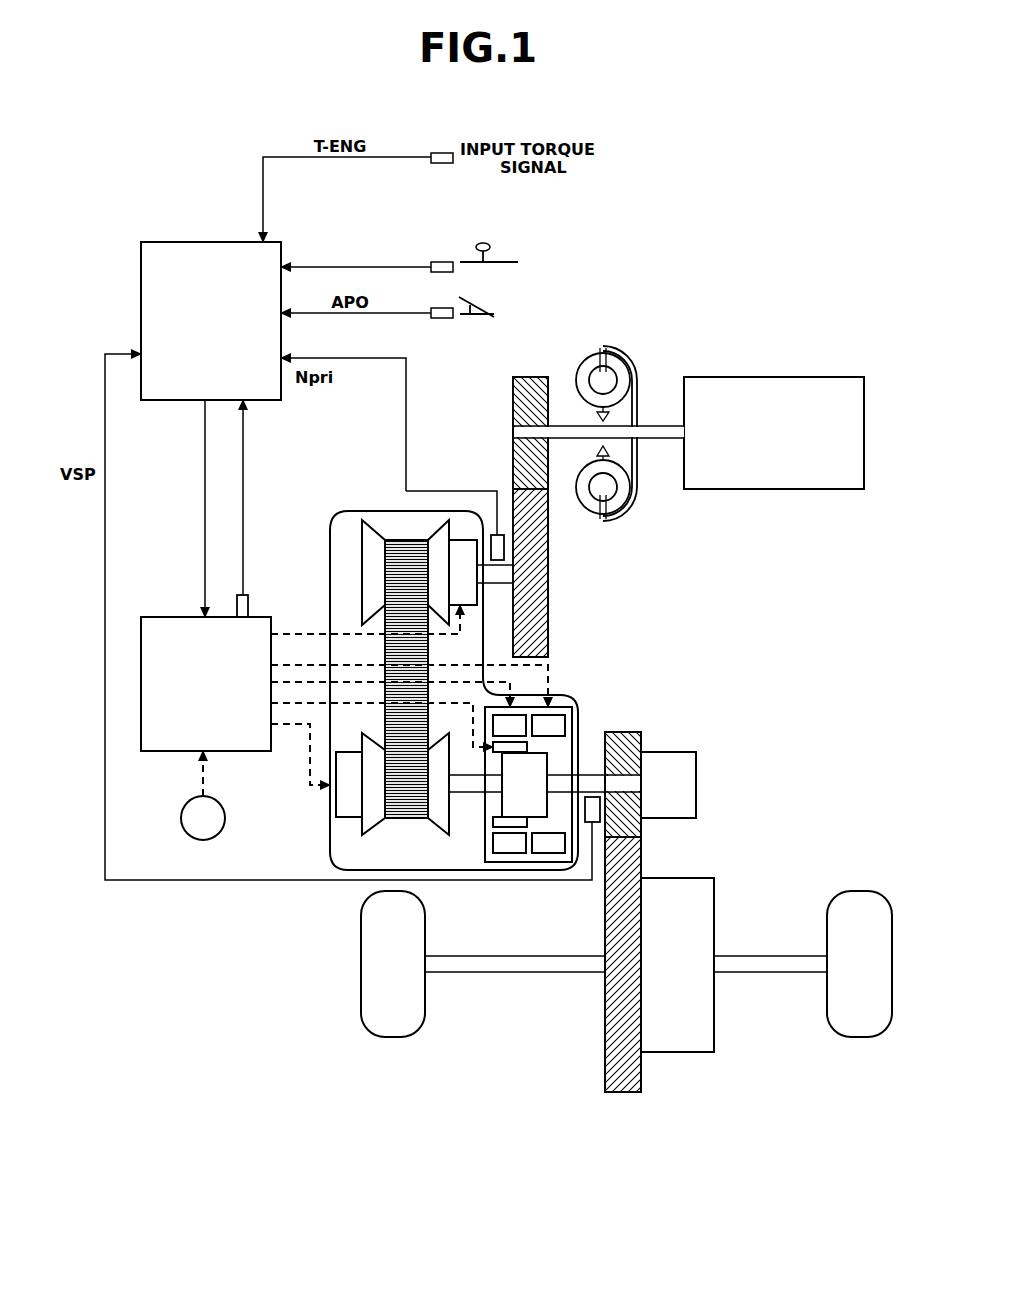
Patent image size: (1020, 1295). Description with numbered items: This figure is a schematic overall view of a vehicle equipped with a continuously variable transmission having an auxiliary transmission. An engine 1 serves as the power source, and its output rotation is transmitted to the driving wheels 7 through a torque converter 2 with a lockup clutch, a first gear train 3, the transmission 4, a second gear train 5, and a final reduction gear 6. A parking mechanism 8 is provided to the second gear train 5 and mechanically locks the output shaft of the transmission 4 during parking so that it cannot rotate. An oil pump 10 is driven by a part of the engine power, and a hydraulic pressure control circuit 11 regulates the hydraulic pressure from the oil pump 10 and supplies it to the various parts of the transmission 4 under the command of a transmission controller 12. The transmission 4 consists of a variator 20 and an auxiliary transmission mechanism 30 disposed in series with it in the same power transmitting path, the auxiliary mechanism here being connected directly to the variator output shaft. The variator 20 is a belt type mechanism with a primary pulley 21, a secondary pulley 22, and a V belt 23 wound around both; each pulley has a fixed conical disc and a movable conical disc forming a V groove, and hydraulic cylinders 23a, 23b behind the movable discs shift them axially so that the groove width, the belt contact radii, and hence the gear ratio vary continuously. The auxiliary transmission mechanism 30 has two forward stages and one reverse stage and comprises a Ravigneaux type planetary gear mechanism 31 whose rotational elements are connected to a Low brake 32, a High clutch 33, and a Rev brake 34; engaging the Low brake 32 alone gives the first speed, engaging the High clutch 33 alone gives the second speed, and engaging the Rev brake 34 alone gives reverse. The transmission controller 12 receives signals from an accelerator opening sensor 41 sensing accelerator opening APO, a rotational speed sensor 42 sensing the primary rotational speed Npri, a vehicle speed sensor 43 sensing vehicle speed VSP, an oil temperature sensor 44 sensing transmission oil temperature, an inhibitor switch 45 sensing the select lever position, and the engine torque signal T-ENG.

The engine 1 is at (849, 395).
The torque converter 2 is at (637, 365).
The first gear train 3 is at (535, 375).
The transmission 4 is at (363, 510).
The second gear train 5 is at (621, 1095).
The final reduction gear 6 is at (691, 1038).
The driving wheels 7 is at (395, 1027).
The parking mechanism 8 is at (682, 767).
The oil pump 10 is at (183, 812).
The hydraulic pressure control circuit 11 is at (160, 625).
The transmission controller 12 is at (213, 257).
The variator 20 is at (352, 662).
The primary pulley 21 is at (376, 572).
The secondary pulley 22 is at (352, 830).
The V belt 23 is at (404, 545).
The hydraulic cylinder 23a is at (462, 550).
The hydraulic cylinder 23b is at (338, 790).
The auxiliary transmission mechanism 30 is at (565, 735).
The Ravigneaux type planetary gear mechanism 31 is at (530, 800).
The Low brake 32 is at (518, 720).
The High clutch 33 is at (500, 823).
The Rev brake 34 is at (557, 722).
The accelerator opening sensor 41 is at (442, 320).
The rotational speed sensor 42 is at (493, 543).
The vehicle speed sensor 43 is at (597, 808).
The oil temperature sensor 44 is at (248, 602).
The inhibitor switch 45 is at (443, 261).